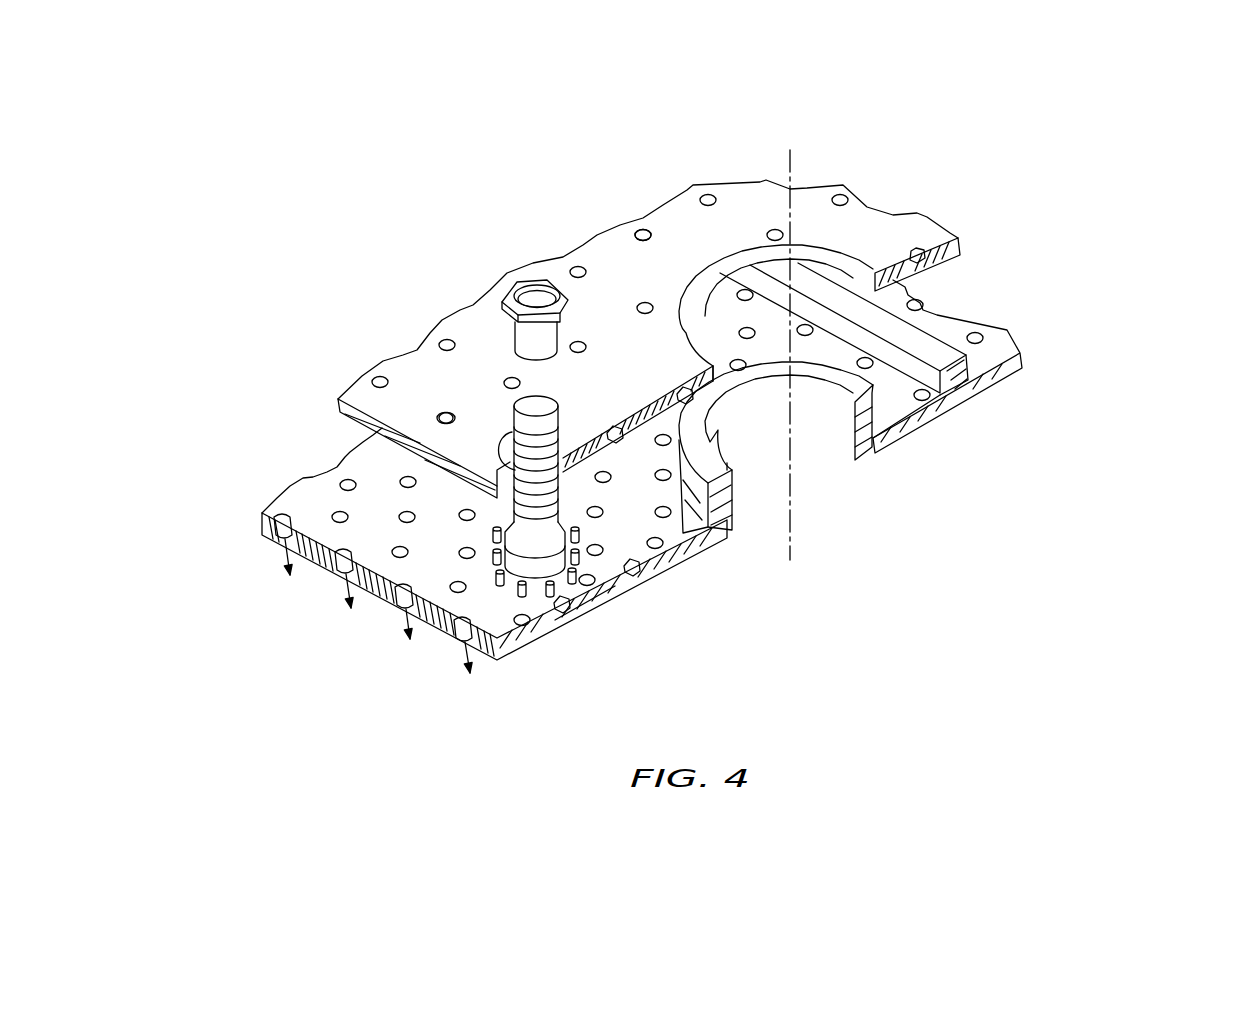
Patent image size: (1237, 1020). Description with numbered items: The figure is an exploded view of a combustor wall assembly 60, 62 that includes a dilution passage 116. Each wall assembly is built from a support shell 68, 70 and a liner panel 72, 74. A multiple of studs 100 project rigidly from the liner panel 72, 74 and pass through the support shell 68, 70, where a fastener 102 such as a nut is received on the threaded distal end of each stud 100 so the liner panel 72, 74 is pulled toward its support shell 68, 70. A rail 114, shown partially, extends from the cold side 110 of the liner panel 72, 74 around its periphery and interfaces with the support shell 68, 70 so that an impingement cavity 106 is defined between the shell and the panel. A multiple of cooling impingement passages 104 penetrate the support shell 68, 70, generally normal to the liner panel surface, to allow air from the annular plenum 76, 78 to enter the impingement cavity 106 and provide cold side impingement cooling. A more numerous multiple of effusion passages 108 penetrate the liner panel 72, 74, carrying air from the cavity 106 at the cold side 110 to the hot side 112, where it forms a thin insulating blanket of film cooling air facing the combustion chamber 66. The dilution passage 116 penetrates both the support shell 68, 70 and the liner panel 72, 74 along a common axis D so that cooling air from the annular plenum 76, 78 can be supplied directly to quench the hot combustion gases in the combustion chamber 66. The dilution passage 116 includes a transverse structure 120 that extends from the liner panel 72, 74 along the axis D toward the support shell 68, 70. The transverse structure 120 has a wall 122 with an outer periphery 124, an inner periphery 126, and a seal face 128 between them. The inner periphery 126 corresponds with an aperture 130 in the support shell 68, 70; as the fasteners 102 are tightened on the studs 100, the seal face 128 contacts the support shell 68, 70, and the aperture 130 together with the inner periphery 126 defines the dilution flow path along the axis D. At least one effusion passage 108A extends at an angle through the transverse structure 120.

The combustor wall assembly 60 is at (701, 392).
The combustor wall assembly 62 is at (1140, 165).
The combustion chamber 66 is at (923, 599).
The support shell 68 is at (703, 356).
The support shell 70 is at (703, 356).
The liner panel 72 is at (1032, 352).
The liner panel 74 is at (1055, 345).
The annular plenum 76 is at (703, 356).
The annular plenum 78 is at (925, 185).
The stud 100 is at (530, 413).
The fastener 102 is at (545, 282).
The cooling impingement passage 104 is at (644, 228).
The impingement cavity 106 is at (310, 448).
The effusion passage 108 is at (977, 335).
The effusion passage 108A is at (732, 500).
The cold side 110 is at (613, 562).
The hot side 112 is at (590, 613).
The rail 114 is at (851, 307).
The dilution passage 116 is at (808, 465).
The transverse structure 120 is at (887, 403).
The wall 122 is at (870, 438).
The outer periphery 124 is at (687, 505).
The inner periphery 126 is at (712, 375).
The seal face 128 is at (920, 347).
The aperture 130 is at (748, 253).
The axis D is at (798, 152).